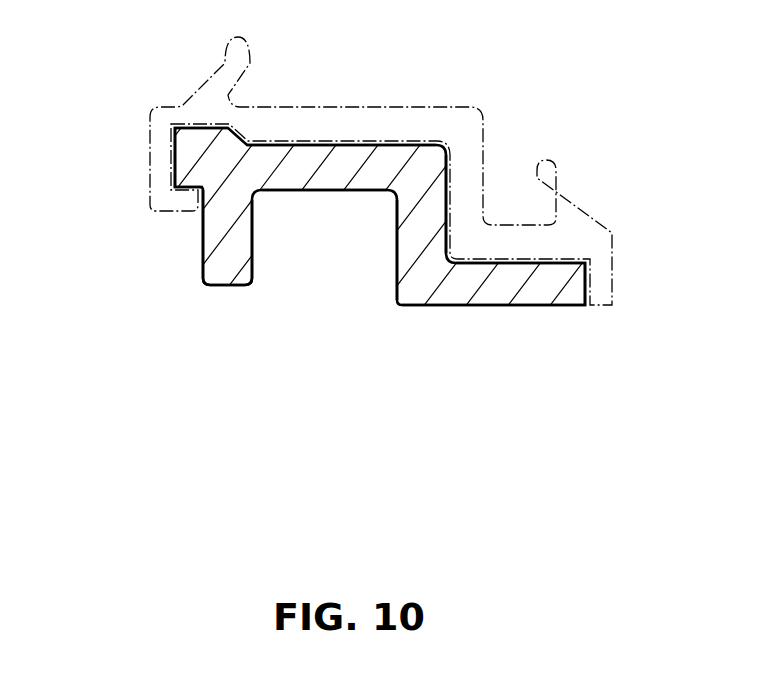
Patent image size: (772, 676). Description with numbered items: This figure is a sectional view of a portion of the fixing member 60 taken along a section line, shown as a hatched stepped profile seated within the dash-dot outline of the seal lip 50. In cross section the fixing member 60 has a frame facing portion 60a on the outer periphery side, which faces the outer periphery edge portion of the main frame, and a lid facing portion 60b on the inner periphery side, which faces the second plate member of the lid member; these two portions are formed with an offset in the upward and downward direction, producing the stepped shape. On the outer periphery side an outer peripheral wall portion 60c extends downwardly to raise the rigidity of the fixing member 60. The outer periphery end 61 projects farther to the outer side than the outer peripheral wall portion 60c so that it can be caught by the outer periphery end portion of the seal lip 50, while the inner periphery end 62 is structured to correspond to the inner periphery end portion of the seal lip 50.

The seal lip 50 is at (588, 196).
The fixing member 60 is at (503, 330).
The frame facing portion 60a is at (328, 192).
The lid facing portion 60b is at (474, 272).
The outer peripheral wall portion 60c is at (222, 286).
The outer periphery end 61 is at (187, 163).
The inner periphery end 62 is at (582, 287).